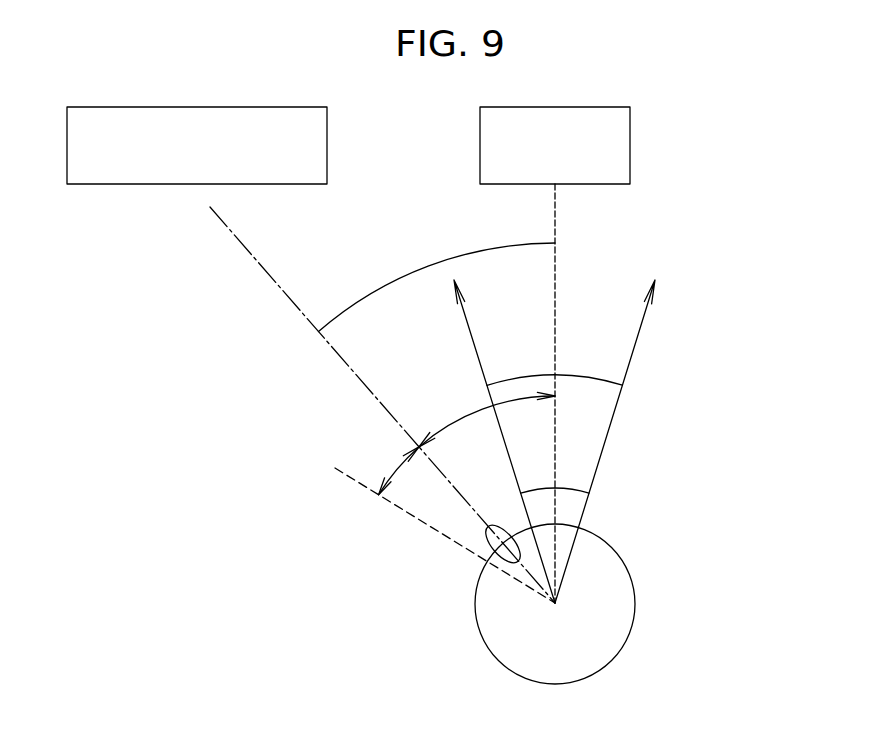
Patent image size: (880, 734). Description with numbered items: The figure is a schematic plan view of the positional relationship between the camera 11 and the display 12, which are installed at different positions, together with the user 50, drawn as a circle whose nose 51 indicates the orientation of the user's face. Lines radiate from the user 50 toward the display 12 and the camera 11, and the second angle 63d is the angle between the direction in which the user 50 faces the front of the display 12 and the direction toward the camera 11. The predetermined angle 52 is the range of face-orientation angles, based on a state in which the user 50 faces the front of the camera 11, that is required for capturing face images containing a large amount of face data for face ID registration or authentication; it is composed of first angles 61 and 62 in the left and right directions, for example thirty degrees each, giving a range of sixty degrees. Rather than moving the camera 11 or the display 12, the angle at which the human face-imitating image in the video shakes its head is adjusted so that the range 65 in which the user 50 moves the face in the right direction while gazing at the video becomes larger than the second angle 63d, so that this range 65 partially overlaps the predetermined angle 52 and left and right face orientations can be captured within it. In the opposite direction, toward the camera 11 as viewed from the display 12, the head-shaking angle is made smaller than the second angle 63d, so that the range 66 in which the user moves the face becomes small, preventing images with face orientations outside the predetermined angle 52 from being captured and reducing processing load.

The display 12 is at (327, 128).
The camera 11 is at (630, 128).
The second angle 63d is at (417, 267).
The predetermined angle 52 is at (591, 379).
The range in which the user moves the face in the right direction 65 is at (467, 412).
The range in which the user moves the face 66 is at (397, 477).
The first angle 61 is at (542, 486).
The first angle 62 is at (572, 484).
The user's nose 51 is at (487, 537).
The user 50 is at (635, 593).